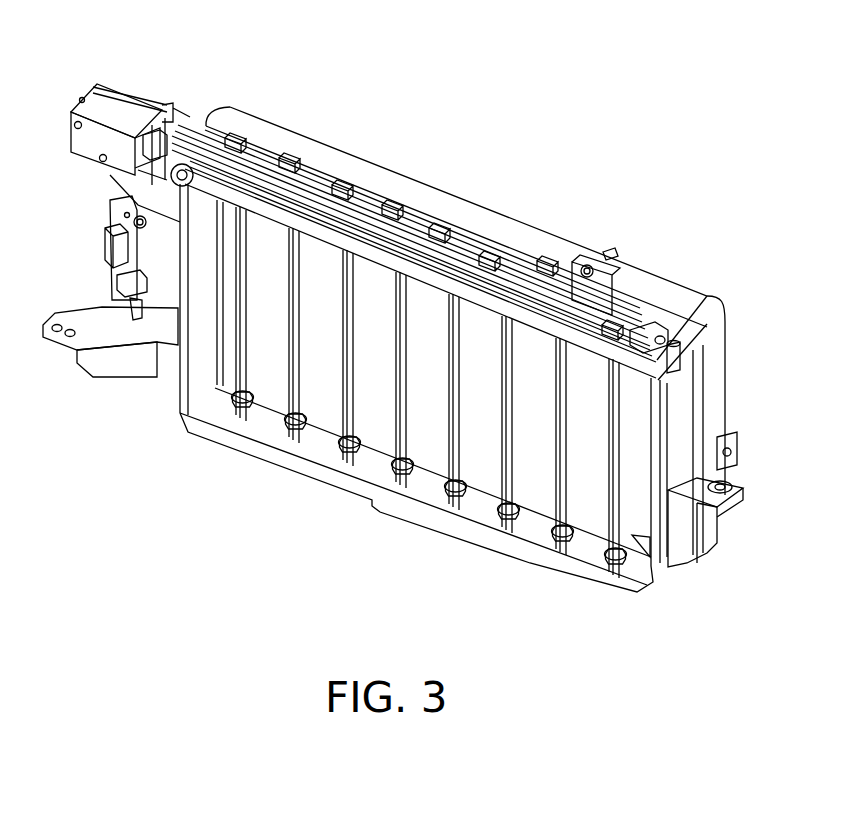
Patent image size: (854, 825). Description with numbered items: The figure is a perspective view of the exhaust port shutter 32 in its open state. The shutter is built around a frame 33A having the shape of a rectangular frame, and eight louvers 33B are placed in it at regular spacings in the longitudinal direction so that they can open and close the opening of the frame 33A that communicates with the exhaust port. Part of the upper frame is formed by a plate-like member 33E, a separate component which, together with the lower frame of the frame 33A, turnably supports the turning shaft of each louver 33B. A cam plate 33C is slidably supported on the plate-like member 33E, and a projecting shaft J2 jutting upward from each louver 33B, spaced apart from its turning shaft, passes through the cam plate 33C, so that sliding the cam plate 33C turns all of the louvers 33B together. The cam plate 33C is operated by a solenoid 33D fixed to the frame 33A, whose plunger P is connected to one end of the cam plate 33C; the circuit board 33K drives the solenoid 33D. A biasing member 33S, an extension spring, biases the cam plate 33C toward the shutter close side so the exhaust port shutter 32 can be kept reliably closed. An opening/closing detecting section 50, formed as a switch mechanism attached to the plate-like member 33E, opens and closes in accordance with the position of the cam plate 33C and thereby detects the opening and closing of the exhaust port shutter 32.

The exhaust port shutter 32 is at (527, 105).
The frame 33A is at (700, 427).
The louvers 33B is at (244, 419).
The cam plate 33C is at (572, 298).
The solenoid 33D is at (74, 100).
The plate-like member 33E is at (682, 360).
The circuit board 33K is at (107, 211).
The biasing member 33S is at (655, 335).
The opening/closing detecting section 50 is at (606, 250).
The projecting shaft J2 is at (233, 136).
The plunger P is at (153, 128).